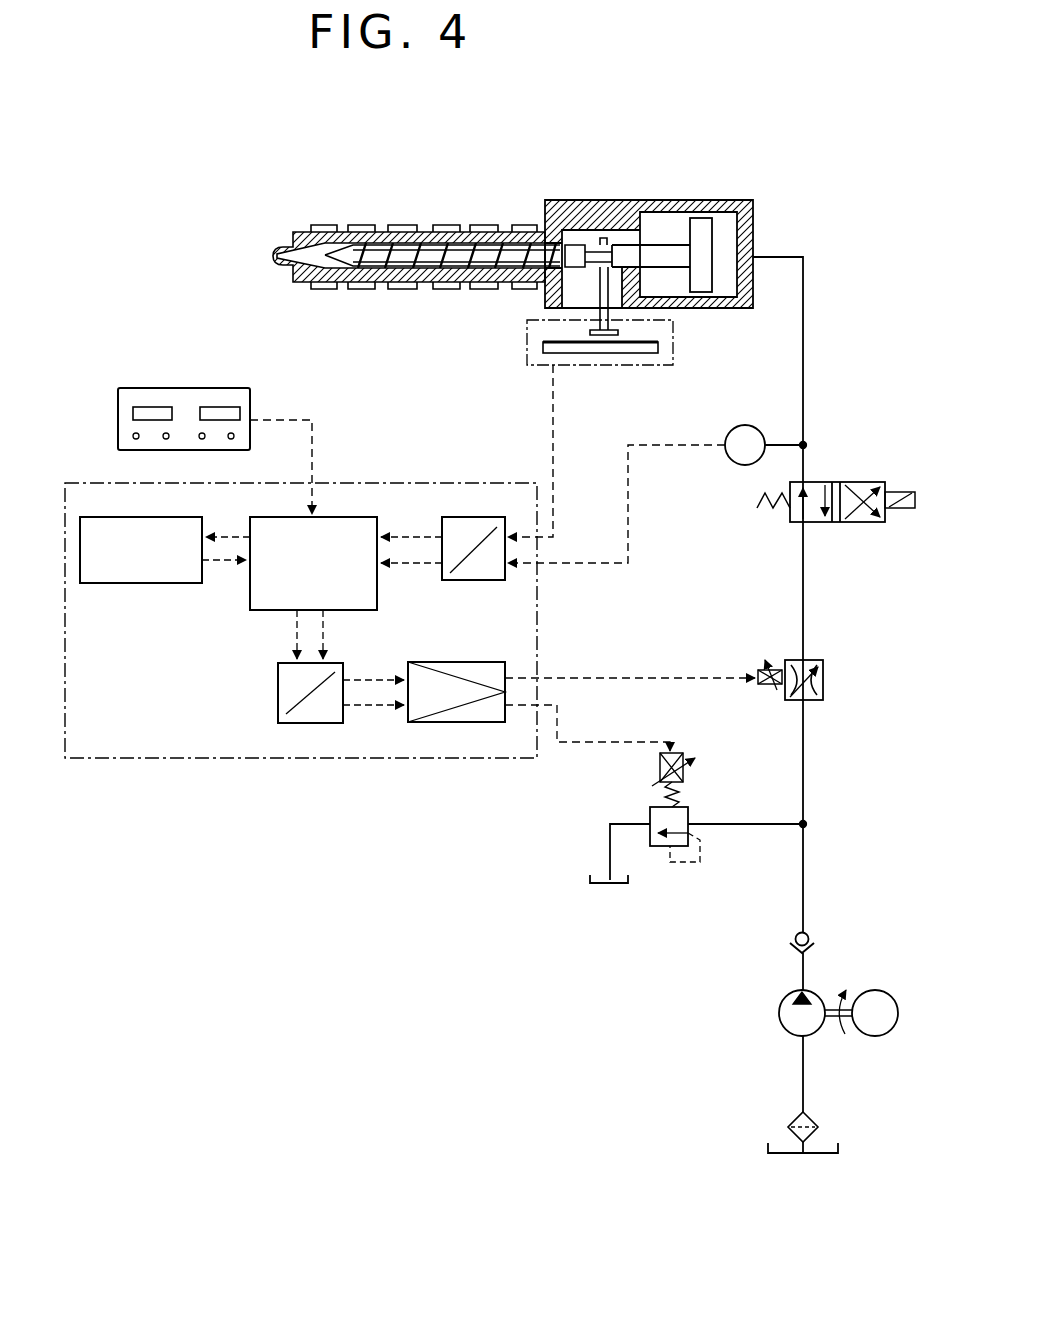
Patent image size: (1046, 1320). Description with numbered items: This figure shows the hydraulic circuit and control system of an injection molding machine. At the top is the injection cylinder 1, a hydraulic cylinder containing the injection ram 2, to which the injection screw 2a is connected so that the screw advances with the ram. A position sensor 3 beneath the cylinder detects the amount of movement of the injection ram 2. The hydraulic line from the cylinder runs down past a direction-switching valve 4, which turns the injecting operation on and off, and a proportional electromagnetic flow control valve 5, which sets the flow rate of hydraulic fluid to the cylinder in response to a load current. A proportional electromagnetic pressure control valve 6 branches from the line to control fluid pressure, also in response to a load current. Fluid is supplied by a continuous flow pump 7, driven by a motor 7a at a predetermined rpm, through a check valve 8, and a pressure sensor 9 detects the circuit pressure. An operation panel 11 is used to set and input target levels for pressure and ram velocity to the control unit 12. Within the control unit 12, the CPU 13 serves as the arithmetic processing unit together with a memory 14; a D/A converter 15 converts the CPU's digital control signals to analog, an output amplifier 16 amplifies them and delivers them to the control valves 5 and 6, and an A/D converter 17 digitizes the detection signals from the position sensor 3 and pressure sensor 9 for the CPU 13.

The injection cylinder 1 is at (752, 205).
The injection ram 2 is at (705, 241).
The injection screw 2a is at (398, 253).
The position sensor 3 is at (676, 350).
The direction-switching valve 4 is at (848, 482).
The proportional electromagnetic flow control valve 5 is at (812, 660).
The proportional electromagnetic pressure control valve 6 is at (690, 812).
The continuous flow pump 7 is at (778, 1014).
The motor 7a is at (881, 990).
The check valve 8 is at (812, 926).
The pressure sensor 9 is at (732, 430).
The operation panel 11 is at (168, 388).
The control unit 12 is at (152, 760).
The CPU 13 is at (255, 591).
The memory 14 is at (156, 585).
The D/A converter 15 is at (278, 703).
The output amplifier 16 is at (437, 662).
The A/D converter 17 is at (492, 582).